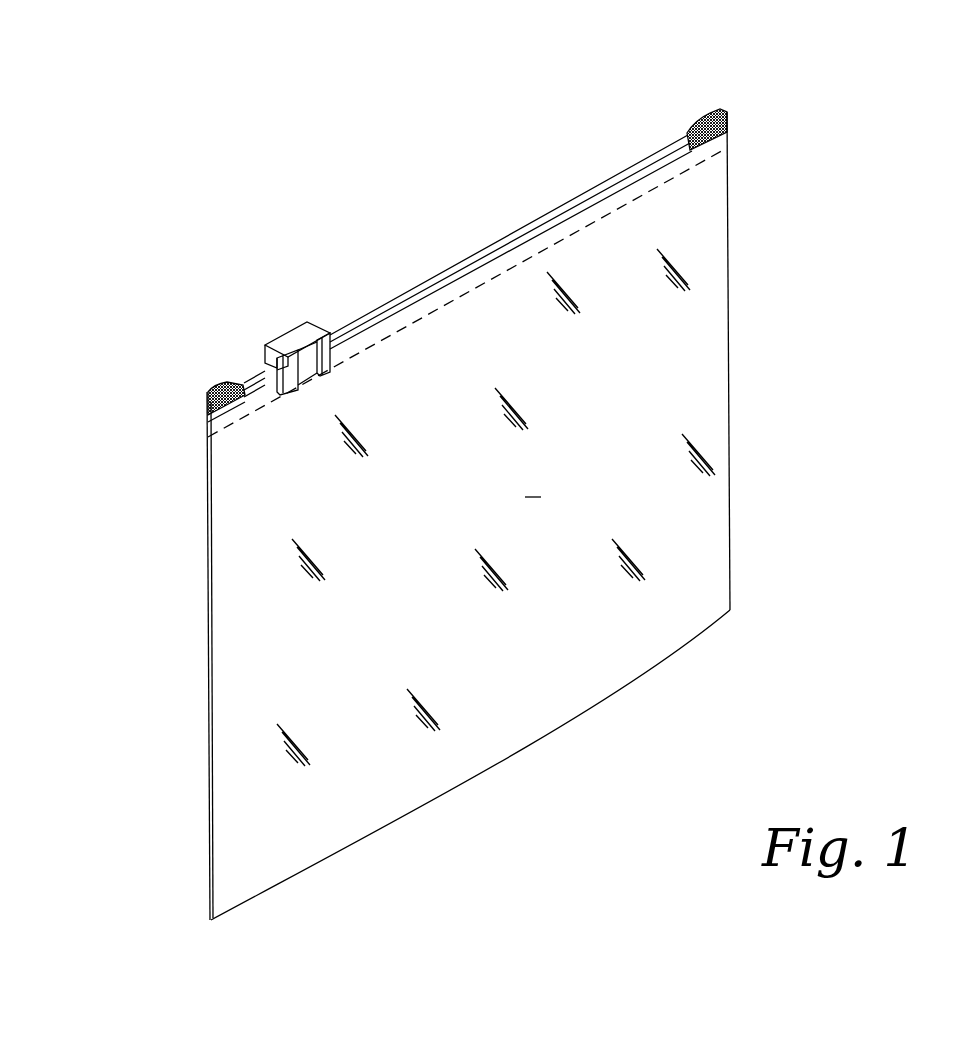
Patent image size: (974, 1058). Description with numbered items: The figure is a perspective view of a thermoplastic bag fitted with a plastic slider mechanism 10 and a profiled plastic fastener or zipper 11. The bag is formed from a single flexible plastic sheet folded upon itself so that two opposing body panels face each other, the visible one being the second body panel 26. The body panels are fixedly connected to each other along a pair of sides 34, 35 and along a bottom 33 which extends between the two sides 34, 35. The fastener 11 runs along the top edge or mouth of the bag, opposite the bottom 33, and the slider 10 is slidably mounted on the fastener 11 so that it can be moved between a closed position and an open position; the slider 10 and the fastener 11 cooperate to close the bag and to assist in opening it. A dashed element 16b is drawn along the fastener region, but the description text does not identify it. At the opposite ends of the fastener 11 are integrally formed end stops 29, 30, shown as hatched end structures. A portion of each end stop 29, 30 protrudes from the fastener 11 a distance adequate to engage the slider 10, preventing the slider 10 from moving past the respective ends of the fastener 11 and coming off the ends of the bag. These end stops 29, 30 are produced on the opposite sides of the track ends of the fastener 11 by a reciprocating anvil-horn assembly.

The slider 10 is at (293, 312).
The fastener 11 is at (538, 204).
The second interlocking profile 16b is at (427, 318).
The second body panel 26 is at (657, 650).
The end stop 29 is at (728, 110).
The end stop 30 is at (213, 380).
The bottom 33 is at (503, 763).
The side 34 is at (208, 682).
The side 35 is at (727, 338).